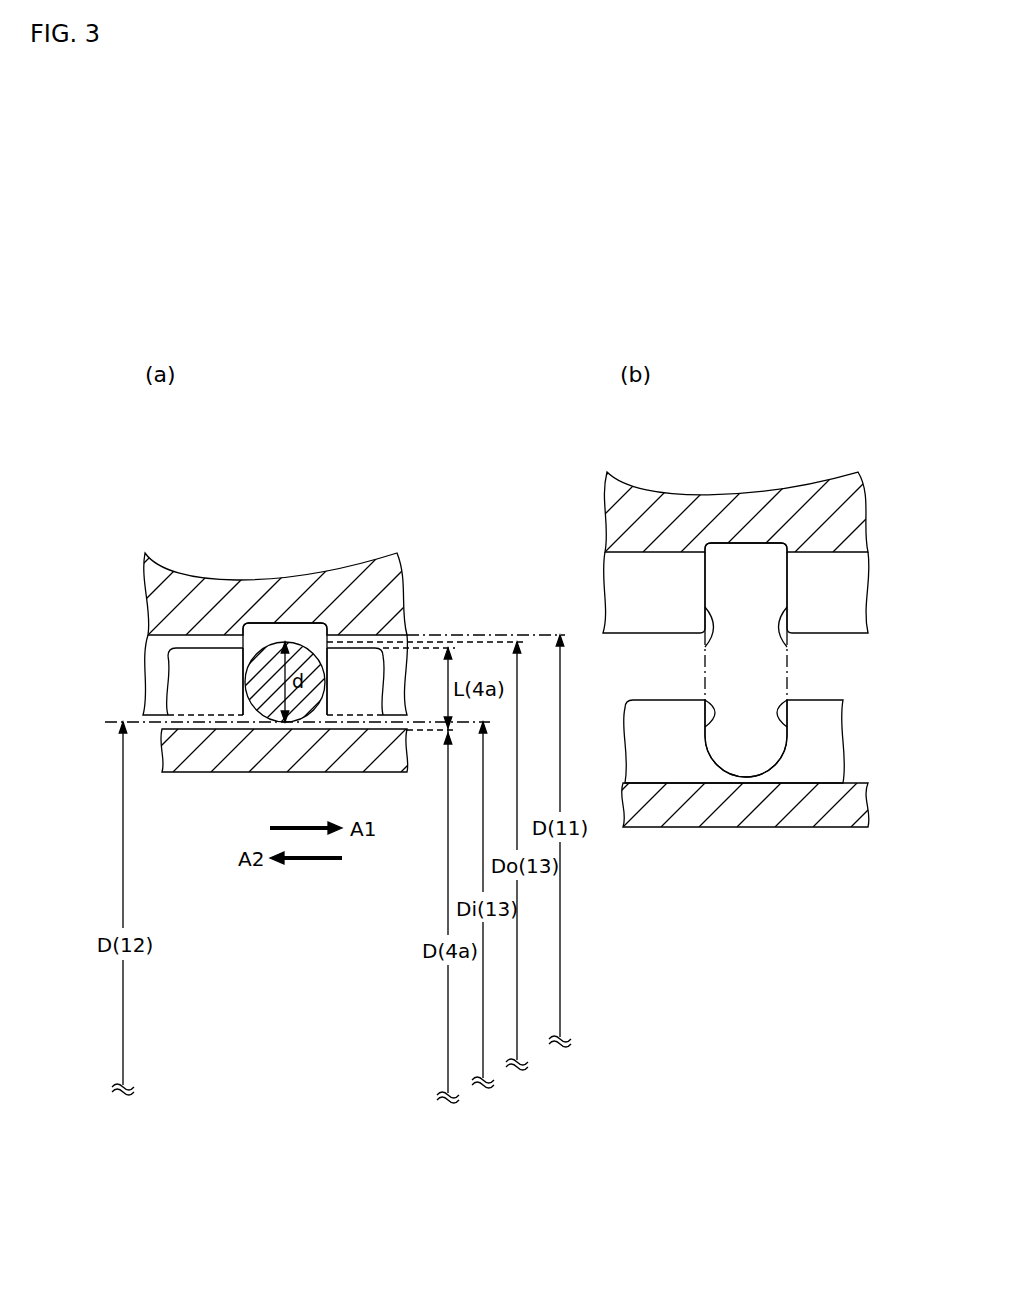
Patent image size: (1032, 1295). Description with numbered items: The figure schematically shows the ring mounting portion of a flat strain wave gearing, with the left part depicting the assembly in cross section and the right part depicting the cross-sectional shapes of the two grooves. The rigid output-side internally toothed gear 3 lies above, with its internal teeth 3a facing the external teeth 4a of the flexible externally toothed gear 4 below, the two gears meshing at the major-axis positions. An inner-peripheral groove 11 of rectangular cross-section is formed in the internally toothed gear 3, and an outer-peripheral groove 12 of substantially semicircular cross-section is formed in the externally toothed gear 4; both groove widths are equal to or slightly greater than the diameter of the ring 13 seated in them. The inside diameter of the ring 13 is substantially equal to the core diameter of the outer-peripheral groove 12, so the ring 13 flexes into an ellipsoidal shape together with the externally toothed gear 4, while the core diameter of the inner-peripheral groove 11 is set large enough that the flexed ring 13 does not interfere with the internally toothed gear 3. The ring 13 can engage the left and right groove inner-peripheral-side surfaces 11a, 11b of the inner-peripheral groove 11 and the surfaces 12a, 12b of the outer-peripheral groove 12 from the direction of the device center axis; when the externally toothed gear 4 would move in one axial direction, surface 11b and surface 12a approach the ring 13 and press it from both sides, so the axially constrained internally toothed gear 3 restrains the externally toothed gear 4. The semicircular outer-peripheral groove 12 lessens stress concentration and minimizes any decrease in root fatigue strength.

The internally toothed gear 3 is at (328, 556).
The internal teeth of the internally toothed gear 3a is at (153, 658).
The externally toothed gear 4 is at (263, 727).
The external teeth of the externally toothed gear 4a is at (173, 680).
The inner-peripheral groove 11 is at (263, 620).
The groove inner-peripheral-side surface 11a is at (707, 641).
The groove inner-peripheral-side surface 11b is at (790, 645).
The outer-peripheral groove 12 is at (255, 712).
The groove inner-peripheral-side surface 12a is at (705, 698).
The groove inner-peripheral-side surface 12b is at (787, 702).
The ring 13 is at (311, 648).